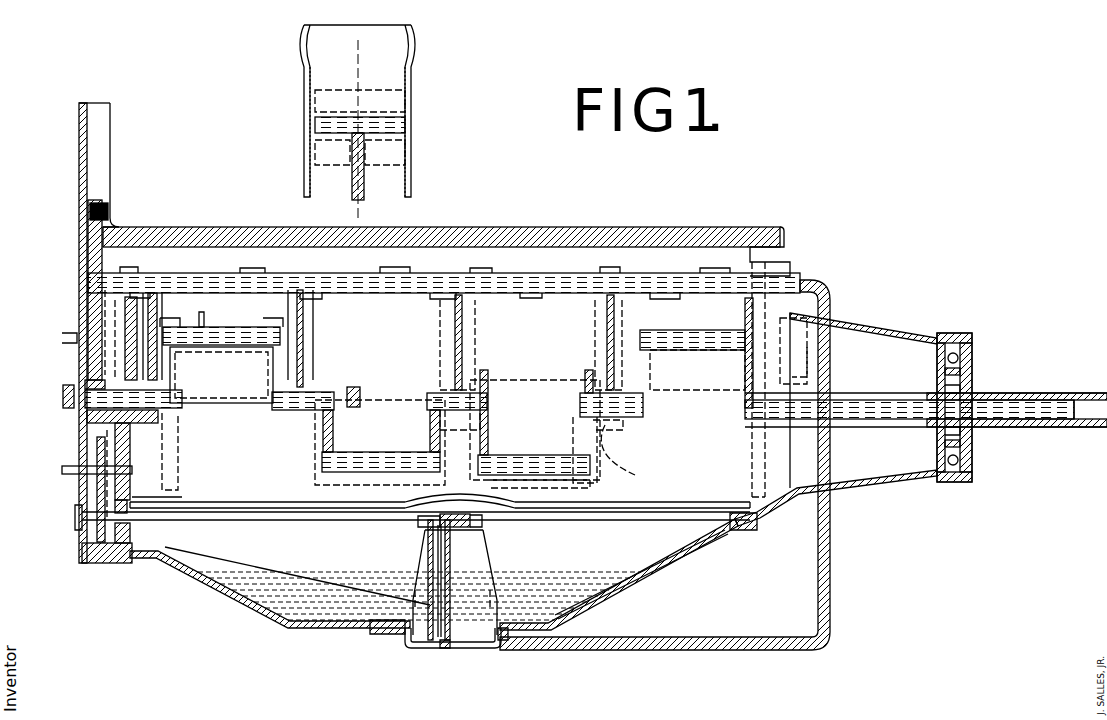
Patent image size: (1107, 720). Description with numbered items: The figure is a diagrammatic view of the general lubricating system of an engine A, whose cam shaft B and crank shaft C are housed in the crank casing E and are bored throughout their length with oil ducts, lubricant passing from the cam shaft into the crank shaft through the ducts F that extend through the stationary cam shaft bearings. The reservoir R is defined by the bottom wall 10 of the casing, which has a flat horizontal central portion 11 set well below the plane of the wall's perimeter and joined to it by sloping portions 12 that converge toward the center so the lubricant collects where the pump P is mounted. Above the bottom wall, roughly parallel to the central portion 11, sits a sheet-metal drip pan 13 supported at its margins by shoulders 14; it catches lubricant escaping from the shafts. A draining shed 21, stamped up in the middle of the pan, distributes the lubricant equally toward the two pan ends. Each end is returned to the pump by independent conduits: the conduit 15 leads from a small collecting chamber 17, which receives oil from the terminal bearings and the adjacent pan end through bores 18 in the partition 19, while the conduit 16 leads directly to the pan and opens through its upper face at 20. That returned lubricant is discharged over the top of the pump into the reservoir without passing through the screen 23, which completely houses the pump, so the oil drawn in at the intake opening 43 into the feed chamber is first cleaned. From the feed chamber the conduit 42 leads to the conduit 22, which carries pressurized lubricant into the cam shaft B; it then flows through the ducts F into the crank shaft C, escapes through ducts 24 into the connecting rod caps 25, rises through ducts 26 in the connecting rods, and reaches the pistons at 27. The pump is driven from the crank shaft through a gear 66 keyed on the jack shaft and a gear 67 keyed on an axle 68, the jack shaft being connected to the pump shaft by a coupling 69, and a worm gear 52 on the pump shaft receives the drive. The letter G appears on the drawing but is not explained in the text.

The bottom wall 10 is at (150, 562).
The flat horizontal central portion 11 is at (345, 623).
The sloping portions 12 is at (654, 568).
The drip pan 13 is at (440, 494).
The shoulders 14 is at (148, 525).
The conduit 15 is at (248, 557).
The conduit 16 is at (600, 565).
The collecting chamber 17 is at (122, 560).
The bores or ducts 18 is at (115, 504).
The partition 19 is at (132, 450).
The opening 20 is at (745, 510).
The draining shed 21 is at (458, 500).
The conduit 22 is at (635, 639).
The screen 23 is at (500, 565).
The ducts 24 is at (612, 425).
The connecting rod caps 25 is at (625, 459).
The ducts 26 is at (204, 312).
The pistons 27 is at (396, 128).
The conduit 42 is at (506, 642).
The intake opening 43 is at (470, 642).
The worm gear 52 is at (478, 524).
The gear 66 is at (97, 535).
The gear 67 is at (88, 488).
The axle 68 is at (62, 470).
The coupling 69 is at (420, 523).
The engine A is at (740, 227).
The cam shaft B is at (565, 271).
The crank shaft C is at (548, 458).
The crank casing E is at (76, 346).
The ducts or conduits F is at (607, 352).
The clutch plate G is at (462, 352).
The pump P is at (488, 549).
The main supply reservoir R is at (343, 550).